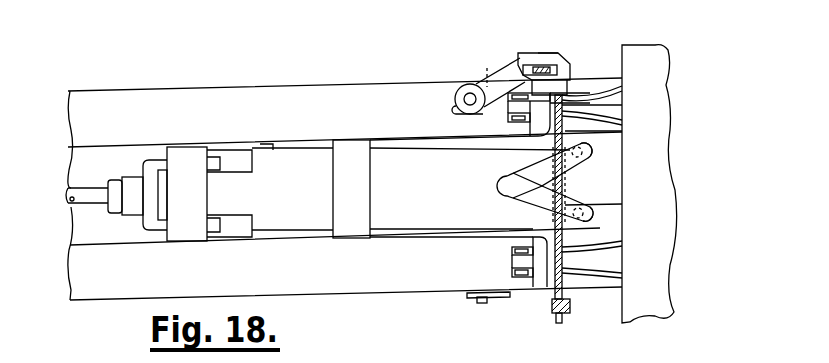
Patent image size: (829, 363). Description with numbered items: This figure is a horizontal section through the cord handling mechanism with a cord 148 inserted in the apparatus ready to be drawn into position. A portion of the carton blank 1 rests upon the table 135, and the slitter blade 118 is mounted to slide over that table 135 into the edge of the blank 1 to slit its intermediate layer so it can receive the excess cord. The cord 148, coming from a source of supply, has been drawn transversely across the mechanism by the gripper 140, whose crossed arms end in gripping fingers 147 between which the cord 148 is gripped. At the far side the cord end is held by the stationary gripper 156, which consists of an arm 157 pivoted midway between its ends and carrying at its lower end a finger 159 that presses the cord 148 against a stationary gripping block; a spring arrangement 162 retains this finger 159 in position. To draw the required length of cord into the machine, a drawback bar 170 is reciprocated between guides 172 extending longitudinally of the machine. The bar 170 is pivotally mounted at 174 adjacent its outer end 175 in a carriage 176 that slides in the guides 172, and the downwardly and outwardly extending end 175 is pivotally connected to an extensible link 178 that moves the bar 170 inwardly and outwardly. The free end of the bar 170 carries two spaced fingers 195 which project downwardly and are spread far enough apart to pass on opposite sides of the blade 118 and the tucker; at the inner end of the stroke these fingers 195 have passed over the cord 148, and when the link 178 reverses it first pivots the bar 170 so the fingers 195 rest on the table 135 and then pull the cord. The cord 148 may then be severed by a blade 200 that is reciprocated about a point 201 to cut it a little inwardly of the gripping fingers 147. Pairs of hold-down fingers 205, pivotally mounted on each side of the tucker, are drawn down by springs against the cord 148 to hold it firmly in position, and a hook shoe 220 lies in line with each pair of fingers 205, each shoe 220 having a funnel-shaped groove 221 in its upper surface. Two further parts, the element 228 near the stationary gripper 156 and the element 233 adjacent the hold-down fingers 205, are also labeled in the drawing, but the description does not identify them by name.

The carton blank 1 is at (655, 105).
The slitter blade 118 is at (506, 190).
The table 135 is at (622, 204).
The gripper 140 is at (566, 322).
The gripping fingers 147 is at (571, 307).
The cord 148 is at (622, 131).
The stationary gripper 156 is at (558, 66).
The arm 157 is at (537, 55).
The finger 159 is at (552, 53).
The spring arrangement 162 is at (497, 73).
The drawback bar 170 is at (405, 225).
The guides 172 is at (189, 100).
The pivot 174 is at (255, 152).
The outer end 175 is at (162, 240).
The carriage 176 is at (188, 160).
The extensible link 178 is at (88, 196).
The spaced fingers 195 is at (594, 212).
The blade 200 is at (468, 294).
The point 201 is at (476, 304).
The hold-down fingers 205 is at (516, 122).
The hook shoe 220 is at (612, 103).
The funnel-shaped groove 221 is at (593, 103).
The bracket 228 is at (530, 82).
The upper slide bracket 233 is at (512, 108).